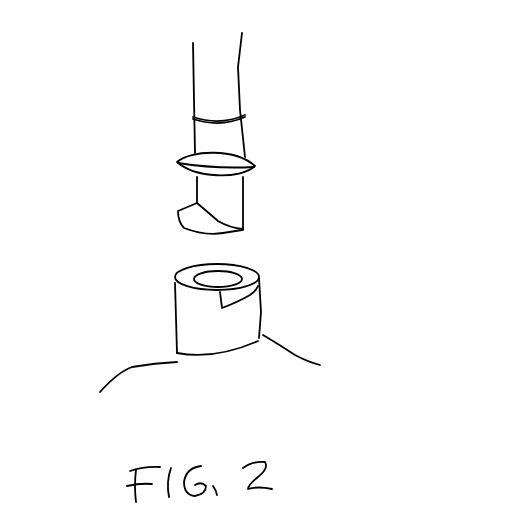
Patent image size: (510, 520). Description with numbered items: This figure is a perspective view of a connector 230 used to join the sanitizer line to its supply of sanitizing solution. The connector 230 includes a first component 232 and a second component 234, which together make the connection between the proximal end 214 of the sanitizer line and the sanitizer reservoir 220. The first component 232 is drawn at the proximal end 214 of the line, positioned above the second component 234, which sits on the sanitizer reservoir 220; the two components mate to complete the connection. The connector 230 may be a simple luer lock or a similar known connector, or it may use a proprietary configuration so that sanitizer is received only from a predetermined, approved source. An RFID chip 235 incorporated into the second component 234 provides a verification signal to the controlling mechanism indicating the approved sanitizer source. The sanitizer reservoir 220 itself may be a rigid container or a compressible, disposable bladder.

The proximal end 214 is at (243, 110).
The first component 232 is at (244, 133).
The second component 234 is at (262, 322).
The RFID chip 235 is at (252, 287).
The connector 230 is at (303, 297).
The sanitizer reservoir 220 is at (132, 367).